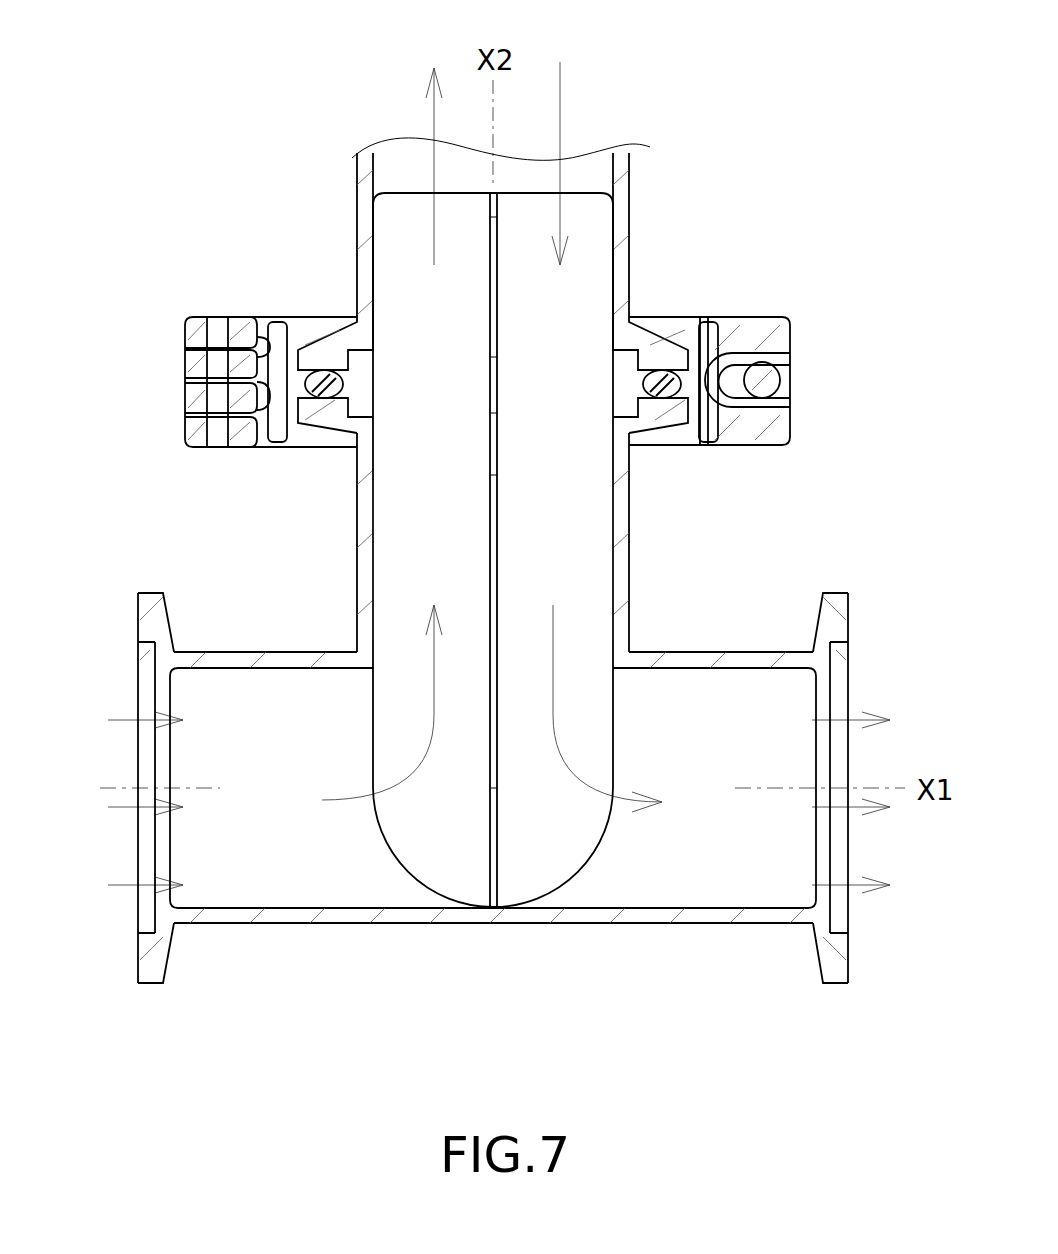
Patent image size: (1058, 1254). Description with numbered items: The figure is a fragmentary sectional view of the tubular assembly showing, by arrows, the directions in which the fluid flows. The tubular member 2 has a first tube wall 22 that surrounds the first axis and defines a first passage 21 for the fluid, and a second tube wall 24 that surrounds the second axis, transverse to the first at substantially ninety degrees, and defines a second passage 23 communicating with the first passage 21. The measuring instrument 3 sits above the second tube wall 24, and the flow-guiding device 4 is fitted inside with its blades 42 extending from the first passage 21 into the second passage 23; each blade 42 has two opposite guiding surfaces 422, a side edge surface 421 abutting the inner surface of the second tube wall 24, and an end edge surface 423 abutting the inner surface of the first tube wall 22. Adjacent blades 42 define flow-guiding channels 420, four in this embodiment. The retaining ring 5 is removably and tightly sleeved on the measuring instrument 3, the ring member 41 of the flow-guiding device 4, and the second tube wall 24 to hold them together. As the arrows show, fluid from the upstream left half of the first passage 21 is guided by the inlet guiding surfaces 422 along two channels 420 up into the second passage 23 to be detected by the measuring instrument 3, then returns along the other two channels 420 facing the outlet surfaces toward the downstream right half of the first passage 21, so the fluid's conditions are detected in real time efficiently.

The tubular member 2 is at (350, 923).
The first passage 21 is at (200, 680).
The first tube wall 22 is at (527, 925).
The second passage 23 is at (620, 463).
The second tube wall 24 is at (628, 516).
The measuring instrument 3 is at (357, 200).
The flow-guiding device 4 is at (574, 193).
The ring member 41 is at (310, 390).
The blade 42 is at (383, 190).
The flow-guiding channel 420 is at (430, 360).
The side edge surface 421 is at (488, 490).
The guiding surface 422 is at (403, 569).
The end edge surface 423 is at (417, 882).
The retaining ring 5 is at (190, 317).